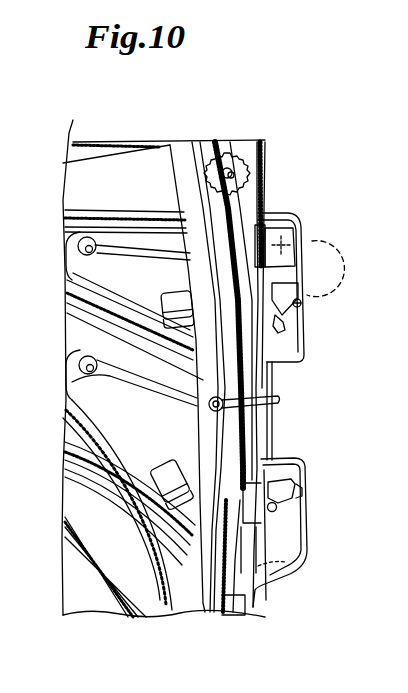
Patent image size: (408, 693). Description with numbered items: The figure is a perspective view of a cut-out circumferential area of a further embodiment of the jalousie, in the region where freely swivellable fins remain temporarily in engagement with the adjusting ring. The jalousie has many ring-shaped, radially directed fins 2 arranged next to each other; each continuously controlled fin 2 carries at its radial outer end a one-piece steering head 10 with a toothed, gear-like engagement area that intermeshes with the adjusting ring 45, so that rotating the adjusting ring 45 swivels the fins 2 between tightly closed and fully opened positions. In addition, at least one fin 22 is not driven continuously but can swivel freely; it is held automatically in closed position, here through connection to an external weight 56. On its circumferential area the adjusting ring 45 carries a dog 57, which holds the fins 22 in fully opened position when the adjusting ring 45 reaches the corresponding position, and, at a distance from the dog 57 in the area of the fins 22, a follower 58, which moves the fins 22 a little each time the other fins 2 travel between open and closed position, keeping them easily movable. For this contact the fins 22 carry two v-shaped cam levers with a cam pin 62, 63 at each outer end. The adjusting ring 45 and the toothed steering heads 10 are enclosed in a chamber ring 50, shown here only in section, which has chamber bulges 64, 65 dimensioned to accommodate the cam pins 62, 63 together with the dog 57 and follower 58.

The fin 2 is at (143, 588).
The steering head 10 is at (232, 165).
The fin 22 is at (103, 272).
The adjusting ring 45 is at (247, 205).
The chamber ring 50 is at (253, 178).
The external weight 56 is at (175, 302).
The dog 57 is at (293, 270).
The follower 58 is at (273, 318).
The cam pin 62 is at (305, 307).
The cam pin 63 is at (283, 322).
The chamber bulge 64 is at (303, 238).
The chamber bulge 65 is at (302, 490).